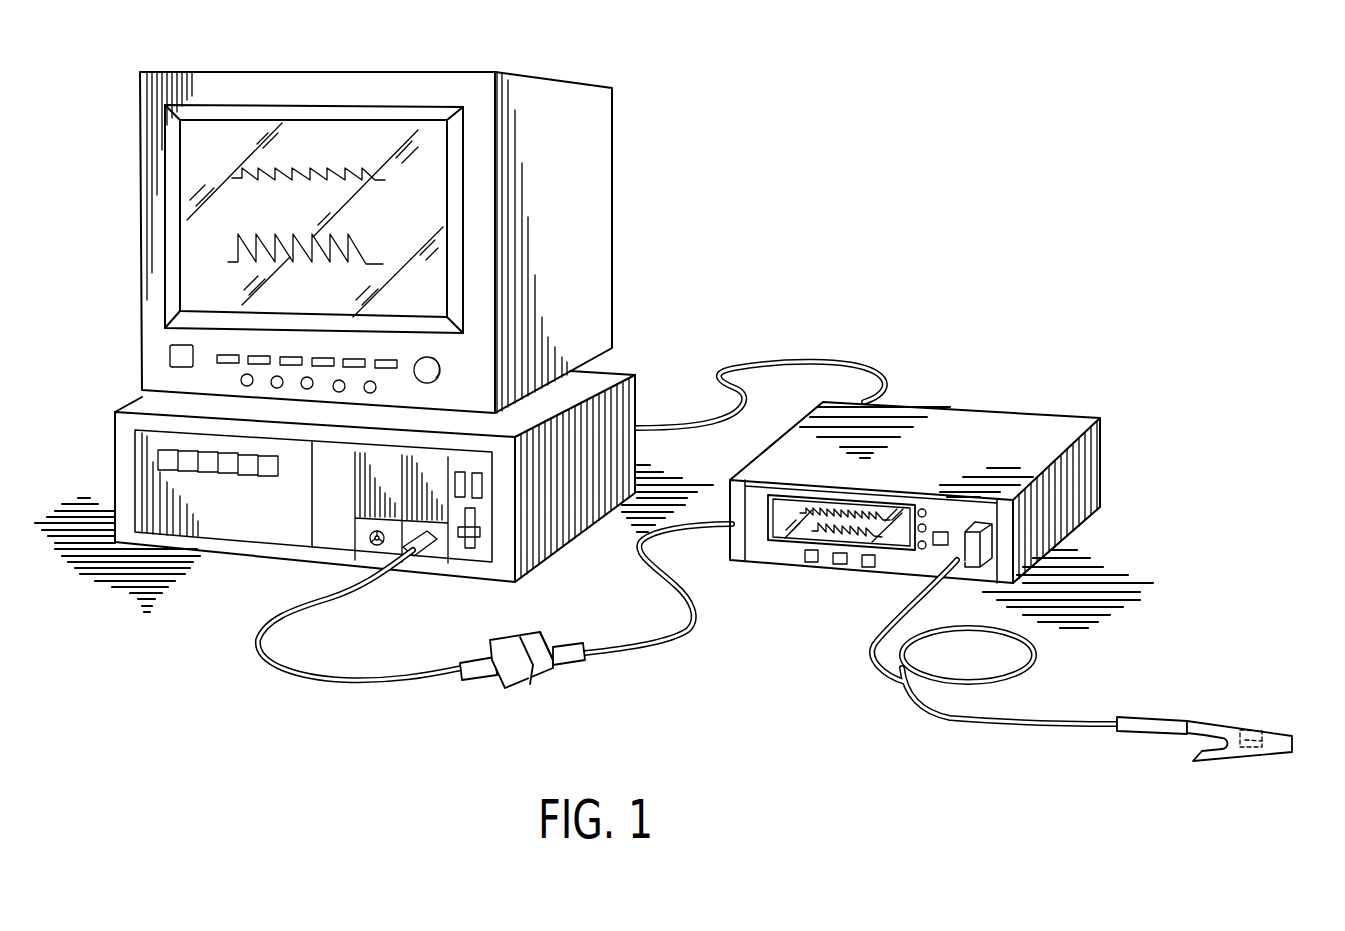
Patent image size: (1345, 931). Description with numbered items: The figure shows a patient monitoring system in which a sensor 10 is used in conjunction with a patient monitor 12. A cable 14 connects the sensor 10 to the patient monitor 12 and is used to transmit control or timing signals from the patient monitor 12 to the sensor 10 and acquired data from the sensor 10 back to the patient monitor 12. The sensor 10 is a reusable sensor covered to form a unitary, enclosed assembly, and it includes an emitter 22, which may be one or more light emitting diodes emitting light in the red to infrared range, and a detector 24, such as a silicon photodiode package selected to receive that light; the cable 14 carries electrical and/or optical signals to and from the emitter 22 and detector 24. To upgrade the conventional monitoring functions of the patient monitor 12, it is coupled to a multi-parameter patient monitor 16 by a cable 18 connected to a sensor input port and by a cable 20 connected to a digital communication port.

The sensor 10 is at (1292, 740).
The patient monitor 12 is at (992, 412).
The cable 14 is at (907, 703).
The multi-parameter patient monitor 16 is at (555, 87).
The cable 18 is at (628, 653).
The cable 20 is at (810, 365).
The emitter 22 is at (1257, 733).
The detector 24 is at (1250, 758).